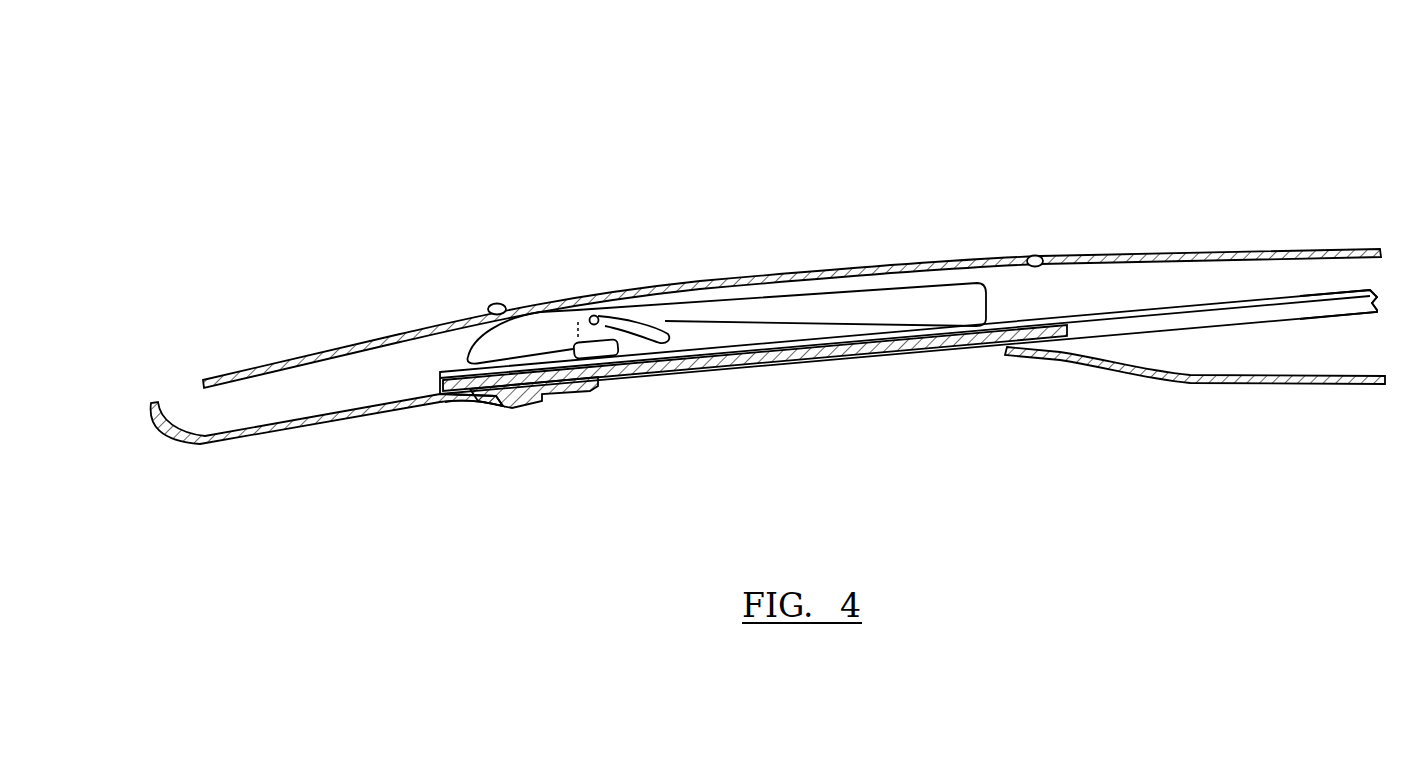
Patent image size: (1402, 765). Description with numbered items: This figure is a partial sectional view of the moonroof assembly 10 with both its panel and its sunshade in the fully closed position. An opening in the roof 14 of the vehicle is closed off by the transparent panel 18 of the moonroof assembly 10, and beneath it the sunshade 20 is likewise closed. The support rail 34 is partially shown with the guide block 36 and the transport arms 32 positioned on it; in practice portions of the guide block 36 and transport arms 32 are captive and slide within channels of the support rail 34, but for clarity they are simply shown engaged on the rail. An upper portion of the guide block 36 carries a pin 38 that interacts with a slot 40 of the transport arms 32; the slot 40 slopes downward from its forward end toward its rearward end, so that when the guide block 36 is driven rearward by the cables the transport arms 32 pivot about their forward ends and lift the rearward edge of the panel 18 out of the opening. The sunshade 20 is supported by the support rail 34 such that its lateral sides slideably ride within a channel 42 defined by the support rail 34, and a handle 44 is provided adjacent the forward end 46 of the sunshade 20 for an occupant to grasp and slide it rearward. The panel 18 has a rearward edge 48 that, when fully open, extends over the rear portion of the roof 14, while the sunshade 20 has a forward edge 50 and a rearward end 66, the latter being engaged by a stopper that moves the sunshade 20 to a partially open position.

The moonroof assembly 10 is at (1038, 98).
The roof 14 is at (323, 343).
The transparent panel 18 is at (699, 278).
The sunshade 20 is at (728, 366).
The transport arms 32 is at (820, 290).
The support rail 34 is at (1150, 308).
The guide block 36 is at (606, 352).
The pin 38 is at (589, 314).
The slot 40 is at (622, 320).
The channel 42 is at (1207, 317).
The handle 44 is at (530, 401).
The forward end 46 is at (489, 303).
The rearward edge 48 is at (1040, 255).
The forward edge 50 is at (455, 398).
The rearward end 66 is at (1077, 333).